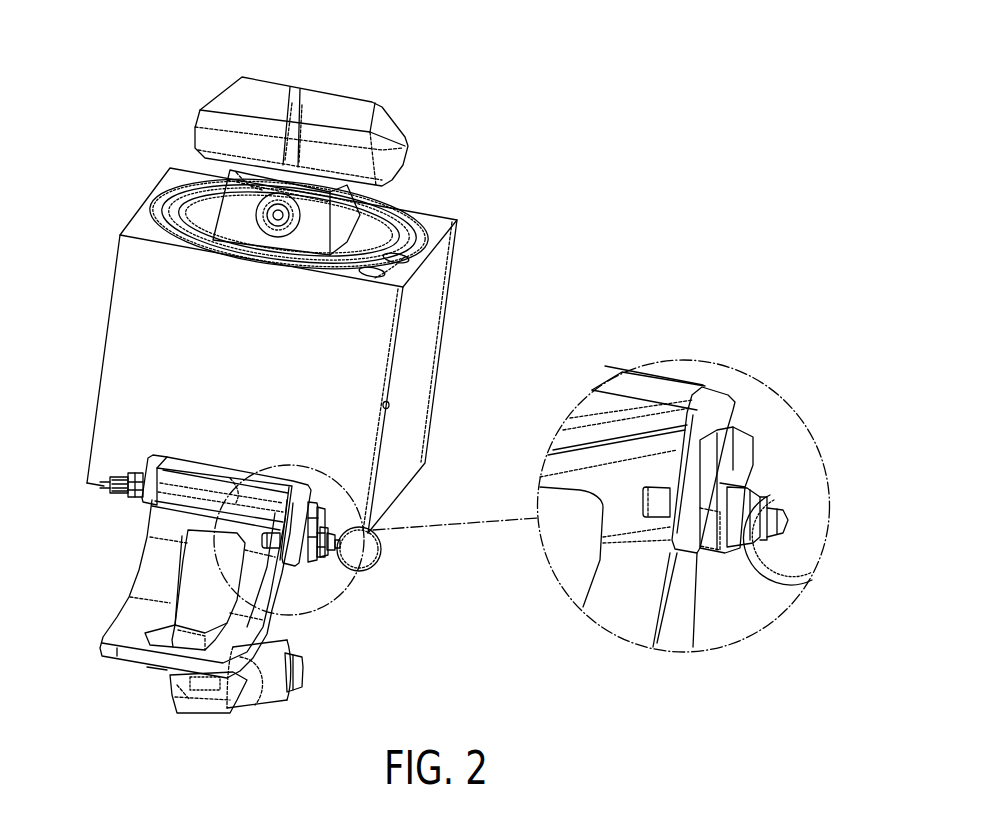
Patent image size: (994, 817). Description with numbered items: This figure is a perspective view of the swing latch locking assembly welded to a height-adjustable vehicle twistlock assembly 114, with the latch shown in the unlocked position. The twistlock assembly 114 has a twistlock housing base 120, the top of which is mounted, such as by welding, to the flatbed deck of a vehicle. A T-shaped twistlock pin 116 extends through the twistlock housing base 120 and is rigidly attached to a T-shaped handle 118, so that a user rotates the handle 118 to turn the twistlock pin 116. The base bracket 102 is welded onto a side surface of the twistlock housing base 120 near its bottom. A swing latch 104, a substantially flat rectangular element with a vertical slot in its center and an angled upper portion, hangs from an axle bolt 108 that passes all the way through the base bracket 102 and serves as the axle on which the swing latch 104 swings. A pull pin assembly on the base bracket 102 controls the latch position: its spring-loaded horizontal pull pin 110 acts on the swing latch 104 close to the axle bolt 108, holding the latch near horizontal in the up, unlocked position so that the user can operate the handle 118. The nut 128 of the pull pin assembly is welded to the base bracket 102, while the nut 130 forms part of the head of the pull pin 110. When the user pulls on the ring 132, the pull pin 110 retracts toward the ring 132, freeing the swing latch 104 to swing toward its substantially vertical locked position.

The base bracket 102 is at (142, 505).
The swing latch 104 is at (108, 653).
The axle bolt 108 is at (740, 435).
The pull pin 110 is at (660, 513).
The height-adjustable vehicle twistlock assembly 114 is at (437, 190).
The T-shaped twistlock pin 116 is at (307, 95).
The handle 118 is at (227, 698).
The twistlock housing base 120 is at (112, 302).
The nut 128 is at (717, 553).
The nut 130 is at (742, 540).
The ring 132 is at (360, 575).